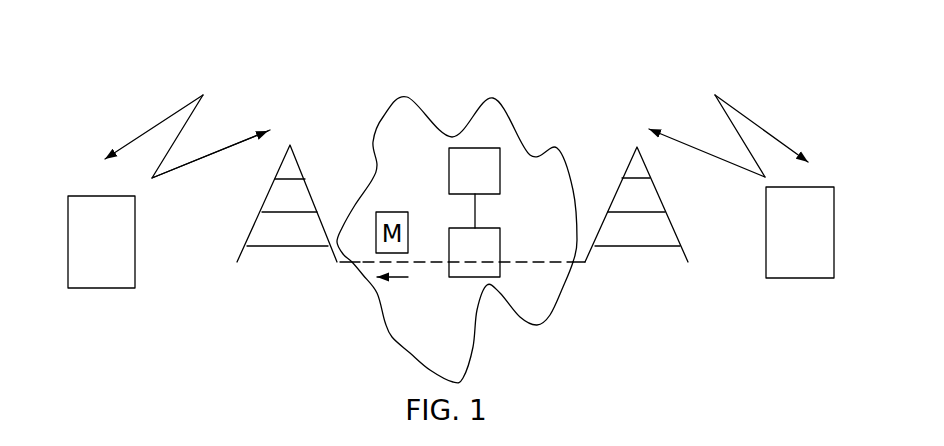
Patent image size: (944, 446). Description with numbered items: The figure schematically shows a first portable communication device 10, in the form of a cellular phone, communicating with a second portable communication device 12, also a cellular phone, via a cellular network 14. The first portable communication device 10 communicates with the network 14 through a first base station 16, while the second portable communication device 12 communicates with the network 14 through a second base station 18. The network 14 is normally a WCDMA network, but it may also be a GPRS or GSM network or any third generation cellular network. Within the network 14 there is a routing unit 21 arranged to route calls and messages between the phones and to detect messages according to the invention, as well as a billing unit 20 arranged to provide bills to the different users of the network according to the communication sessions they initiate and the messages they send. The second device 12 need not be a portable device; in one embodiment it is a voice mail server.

The first portable communication device 10 is at (100, 288).
The second portable communication device 12 is at (799, 278).
The cellular network 14 is at (408, 95).
The first base station 16 is at (242, 253).
The second base station 18 is at (625, 246).
The billing unit 20 is at (474, 188).
The routing unit 21 is at (474, 252).